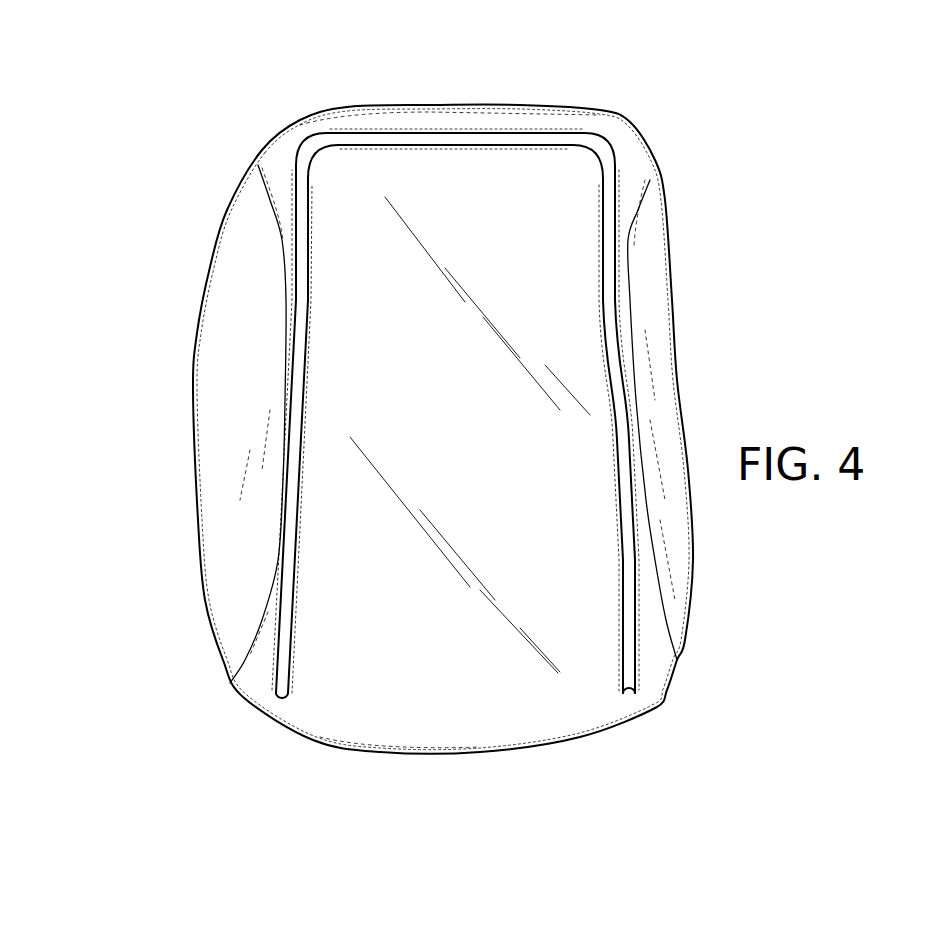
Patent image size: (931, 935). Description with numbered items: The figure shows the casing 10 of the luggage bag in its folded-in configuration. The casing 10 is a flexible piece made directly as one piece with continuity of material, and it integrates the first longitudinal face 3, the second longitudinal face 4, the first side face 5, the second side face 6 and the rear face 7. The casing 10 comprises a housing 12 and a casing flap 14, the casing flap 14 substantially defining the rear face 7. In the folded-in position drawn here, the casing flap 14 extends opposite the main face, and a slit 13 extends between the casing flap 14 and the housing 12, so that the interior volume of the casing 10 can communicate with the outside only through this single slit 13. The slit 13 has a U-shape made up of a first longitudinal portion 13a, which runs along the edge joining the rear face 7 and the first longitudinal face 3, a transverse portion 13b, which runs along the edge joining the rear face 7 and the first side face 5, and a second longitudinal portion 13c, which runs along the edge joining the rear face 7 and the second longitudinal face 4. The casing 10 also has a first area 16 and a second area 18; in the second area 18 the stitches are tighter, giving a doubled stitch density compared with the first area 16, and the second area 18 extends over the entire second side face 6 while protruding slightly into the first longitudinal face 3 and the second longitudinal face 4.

The casing 10 is at (630, 103).
The first longitudinal face 3 is at (240, 282).
The second longitudinal face 4 is at (662, 370).
The first side face 5 is at (365, 122).
The second side face 6 is at (388, 725).
The rear face 7 is at (540, 535).
The casing flap 14 is at (578, 207).
The slit 13 is at (303, 167).
The first longitudinal portion 13a is at (288, 583).
The transverse portion 13b is at (515, 140).
The second longitudinal portion 13c is at (628, 602).
The housing 12 is at (687, 697).
The first area 16 is at (170, 373).
The second area 18 is at (308, 757).